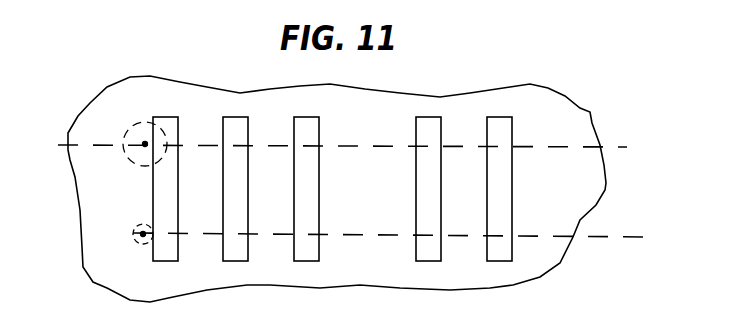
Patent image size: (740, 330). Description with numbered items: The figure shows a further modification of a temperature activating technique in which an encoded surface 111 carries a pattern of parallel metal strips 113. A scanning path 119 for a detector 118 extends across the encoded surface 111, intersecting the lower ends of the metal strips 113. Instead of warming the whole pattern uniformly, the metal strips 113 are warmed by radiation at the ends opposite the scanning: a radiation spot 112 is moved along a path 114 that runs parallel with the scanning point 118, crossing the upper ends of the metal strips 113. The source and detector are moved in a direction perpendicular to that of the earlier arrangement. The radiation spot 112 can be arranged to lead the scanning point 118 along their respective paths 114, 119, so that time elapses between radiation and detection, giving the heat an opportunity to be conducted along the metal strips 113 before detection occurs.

The encoded surface 111 is at (337, 120).
The radiation spot 112 is at (125, 128).
The metal strips 113 is at (312, 195).
The path 114 is at (625, 143).
The detector 118 is at (136, 226).
The scanning path 119 is at (643, 236).